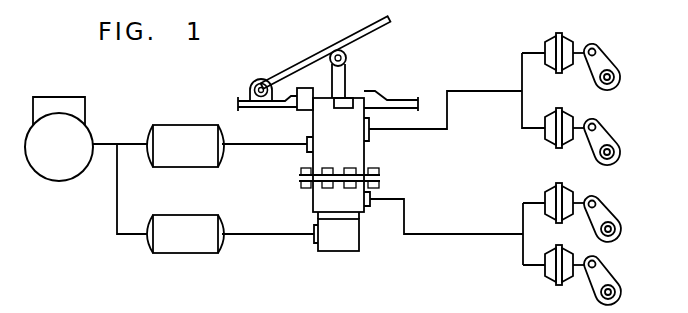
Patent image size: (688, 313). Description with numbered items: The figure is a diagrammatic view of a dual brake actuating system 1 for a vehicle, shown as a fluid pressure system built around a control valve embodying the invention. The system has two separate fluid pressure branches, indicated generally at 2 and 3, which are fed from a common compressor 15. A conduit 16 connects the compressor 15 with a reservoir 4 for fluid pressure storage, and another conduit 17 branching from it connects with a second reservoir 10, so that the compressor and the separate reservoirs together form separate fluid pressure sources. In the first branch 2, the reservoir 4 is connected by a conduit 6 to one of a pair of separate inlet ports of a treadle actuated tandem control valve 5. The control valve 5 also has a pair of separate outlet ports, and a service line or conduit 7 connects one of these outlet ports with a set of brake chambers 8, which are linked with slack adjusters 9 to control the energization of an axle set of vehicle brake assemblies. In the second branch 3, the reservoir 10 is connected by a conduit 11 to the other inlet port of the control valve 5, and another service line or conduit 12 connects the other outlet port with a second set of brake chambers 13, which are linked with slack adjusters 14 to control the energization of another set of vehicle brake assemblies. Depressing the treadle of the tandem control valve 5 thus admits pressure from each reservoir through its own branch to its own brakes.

The dual brake actuating system 1 is at (256, 59).
The fluid pressure branch 2 is at (171, 125).
The fluid pressure branch 3 is at (171, 254).
The reservoir 4 is at (196, 124).
The treadle actuated tandem control valve 5 is at (347, 148).
The conduit 6 is at (265, 145).
The service line or conduit 7 is at (476, 93).
The brake chambers 8 is at (557, 106).
The slack adjusters 9 is at (622, 98).
The reservoir 10 is at (200, 254).
The conduit 11 is at (262, 236).
The service line or conduit 12 is at (463, 235).
The brake chambers 13 is at (556, 248).
The slack adjusters 14 is at (620, 275).
The compressor 15 is at (58, 97).
The conduit 16 is at (135, 146).
The conduit 17 is at (117, 211).